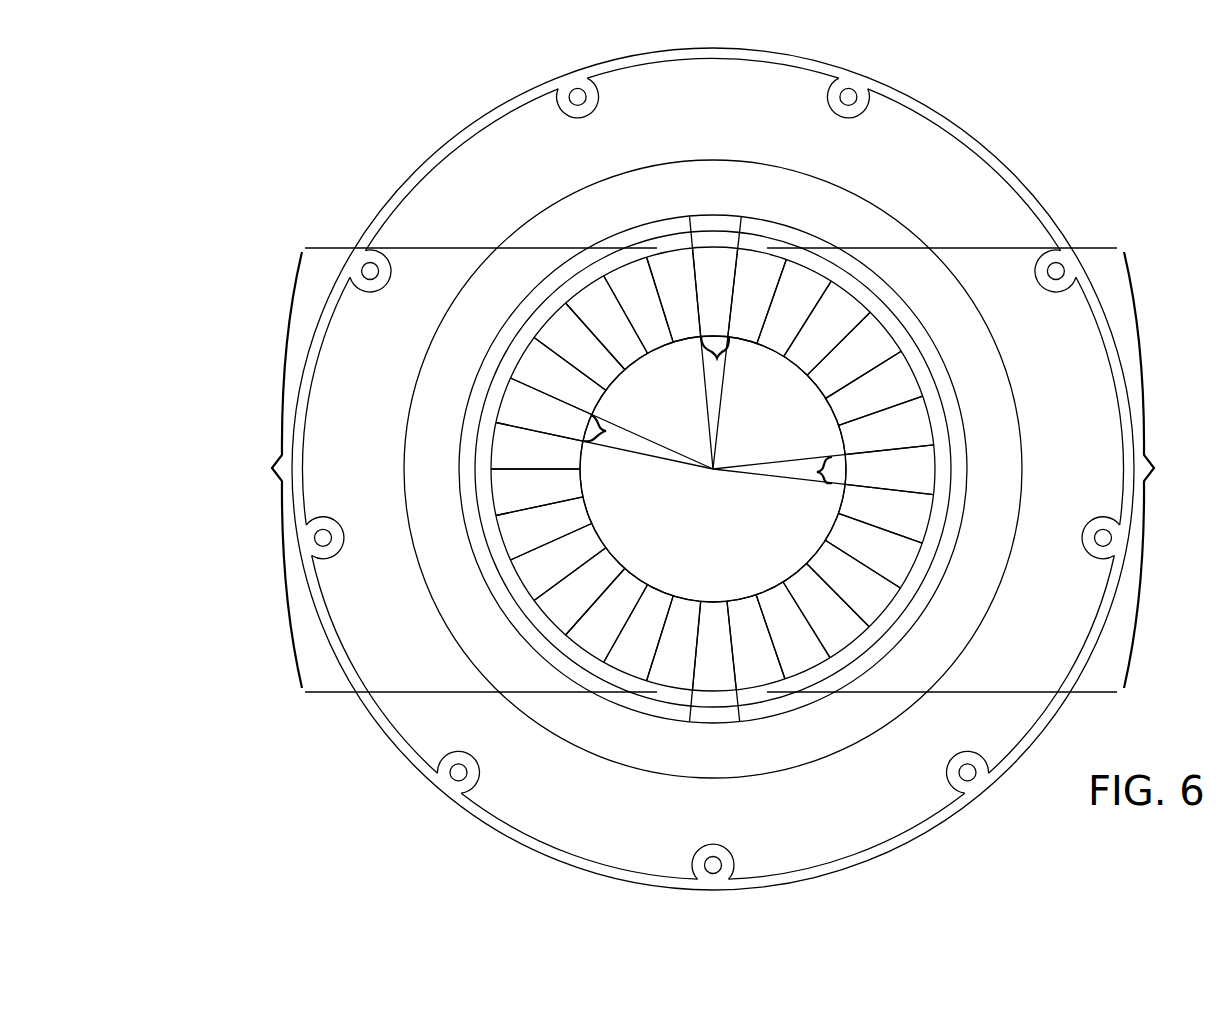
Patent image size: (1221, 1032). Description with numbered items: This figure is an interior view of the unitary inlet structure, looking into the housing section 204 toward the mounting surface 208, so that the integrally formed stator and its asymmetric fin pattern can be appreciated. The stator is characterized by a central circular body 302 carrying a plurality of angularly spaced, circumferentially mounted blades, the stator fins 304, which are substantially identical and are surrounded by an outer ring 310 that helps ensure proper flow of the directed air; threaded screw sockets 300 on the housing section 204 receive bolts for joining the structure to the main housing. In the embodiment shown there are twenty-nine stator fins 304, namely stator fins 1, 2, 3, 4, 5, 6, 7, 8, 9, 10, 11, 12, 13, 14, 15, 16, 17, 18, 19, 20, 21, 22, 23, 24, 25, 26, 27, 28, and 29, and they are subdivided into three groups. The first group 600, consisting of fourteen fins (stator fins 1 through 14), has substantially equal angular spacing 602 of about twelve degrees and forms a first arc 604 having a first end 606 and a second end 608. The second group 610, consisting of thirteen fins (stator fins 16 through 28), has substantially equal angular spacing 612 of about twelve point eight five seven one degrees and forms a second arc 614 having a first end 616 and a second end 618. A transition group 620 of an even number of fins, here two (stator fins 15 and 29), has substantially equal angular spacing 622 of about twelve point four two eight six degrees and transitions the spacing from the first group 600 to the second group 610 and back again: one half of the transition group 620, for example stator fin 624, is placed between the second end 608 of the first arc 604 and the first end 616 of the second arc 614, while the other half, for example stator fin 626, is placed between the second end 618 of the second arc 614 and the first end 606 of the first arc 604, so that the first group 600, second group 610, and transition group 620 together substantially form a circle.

The housing section 204 is at (422, 200).
The mounting surface 208 is at (520, 102).
The threaded screw socket 300 is at (968, 794).
The central circular body 302 is at (713, 469).
The stator fin 304 is at (646, 577).
The outer ring 310 is at (888, 622).
The first group 600 is at (754, 470).
The angular spacing 602 is at (817, 472).
The first arc 604 is at (958, 432).
The first end 606 is at (732, 680).
The second end 608 is at (738, 260).
The second group 610 is at (262, 470).
The angular spacing 612 is at (606, 431).
The second arc 614 is at (472, 470).
The first end 616 is at (702, 260).
The second end 618 is at (702, 678).
The transition group 620 is at (718, 262).
The angular spacing 622 is at (717, 358).
The stator fin 624 is at (727, 258).
The stator fin 626 is at (708, 682).
The stator fin 1 is at (756, 642).
The stator fin 2 is at (793, 630).
The stator fin 3 is at (826, 611).
The stator fin 4 is at (854, 583).
The stator fin 5 is at (873, 550).
The stator fin 6 is at (885, 513).
The stator fin 7 is at (823, 470).
The stator fin 8 is at (886, 425).
The stator fin 9 is at (874, 388).
The stator fin 10 is at (854, 355).
The stator fin 11 is at (827, 328).
The stator fin 12 is at (794, 308).
The stator fin 13 is at (757, 295).
The stator fin 14 is at (716, 342).
The stator fin 15 is at (674, 295).
The stator fin 16 is at (639, 305).
The stator fin 17 is at (607, 323).
The stator fin 18 is at (579, 346).
The stator fin 19 is at (558, 376).
The stator fin 20 is at (604, 423).
The stator fin 21 is at (537, 446).
The stator fin 22 is at (537, 492).
The stator fin 23 is at (544, 528).
The stator fin 24 is at (558, 562).
The stator fin 25 is at (579, 591).
The stator fin 26 is at (607, 616).
The stator fin 27 is at (639, 633).
The stator fin 28 is at (674, 643).
The stator fin 29 is at (715, 661).